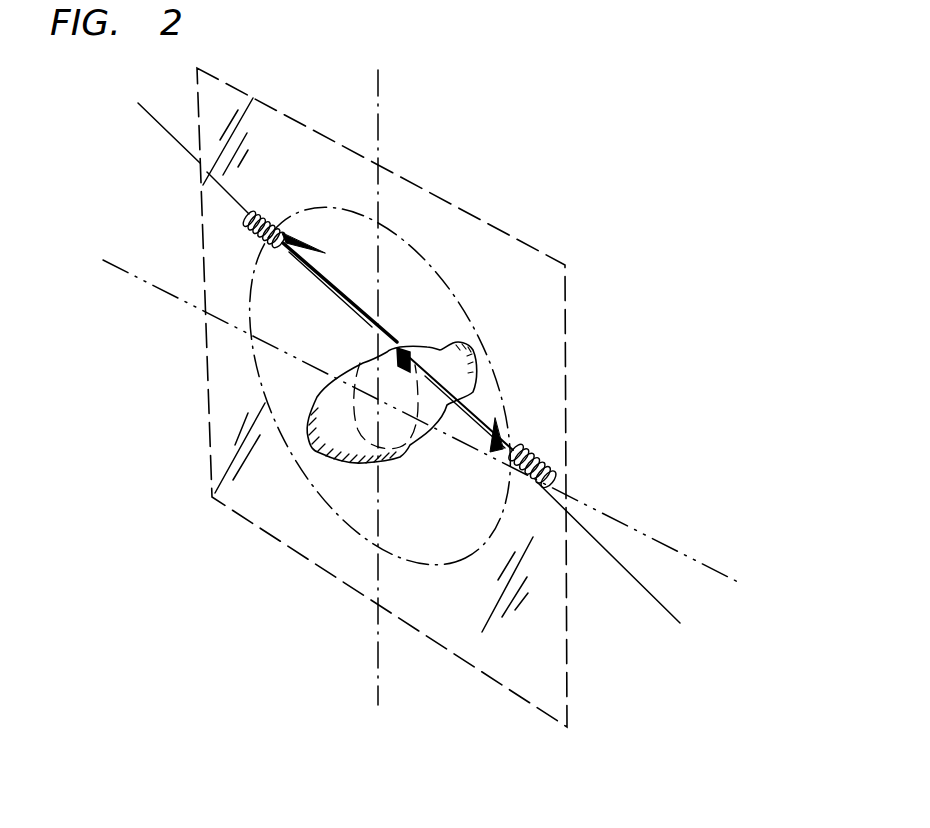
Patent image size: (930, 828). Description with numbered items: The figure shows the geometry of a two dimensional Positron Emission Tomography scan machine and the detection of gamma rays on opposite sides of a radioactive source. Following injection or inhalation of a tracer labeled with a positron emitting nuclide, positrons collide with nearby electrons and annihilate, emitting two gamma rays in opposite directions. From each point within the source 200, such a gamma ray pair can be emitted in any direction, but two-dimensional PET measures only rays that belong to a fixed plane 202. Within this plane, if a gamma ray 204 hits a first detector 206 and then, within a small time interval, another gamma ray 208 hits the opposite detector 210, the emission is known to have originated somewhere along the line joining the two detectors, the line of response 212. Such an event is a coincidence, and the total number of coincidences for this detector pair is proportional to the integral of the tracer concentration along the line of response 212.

The source 200 is at (410, 348).
The fixed plane 202 is at (437, 197).
The gamma ray 204 is at (470, 413).
The first detector 206 is at (550, 457).
The gamma ray 208 is at (340, 282).
The opposite detector 210 is at (265, 212).
The line of response 212 is at (632, 580).